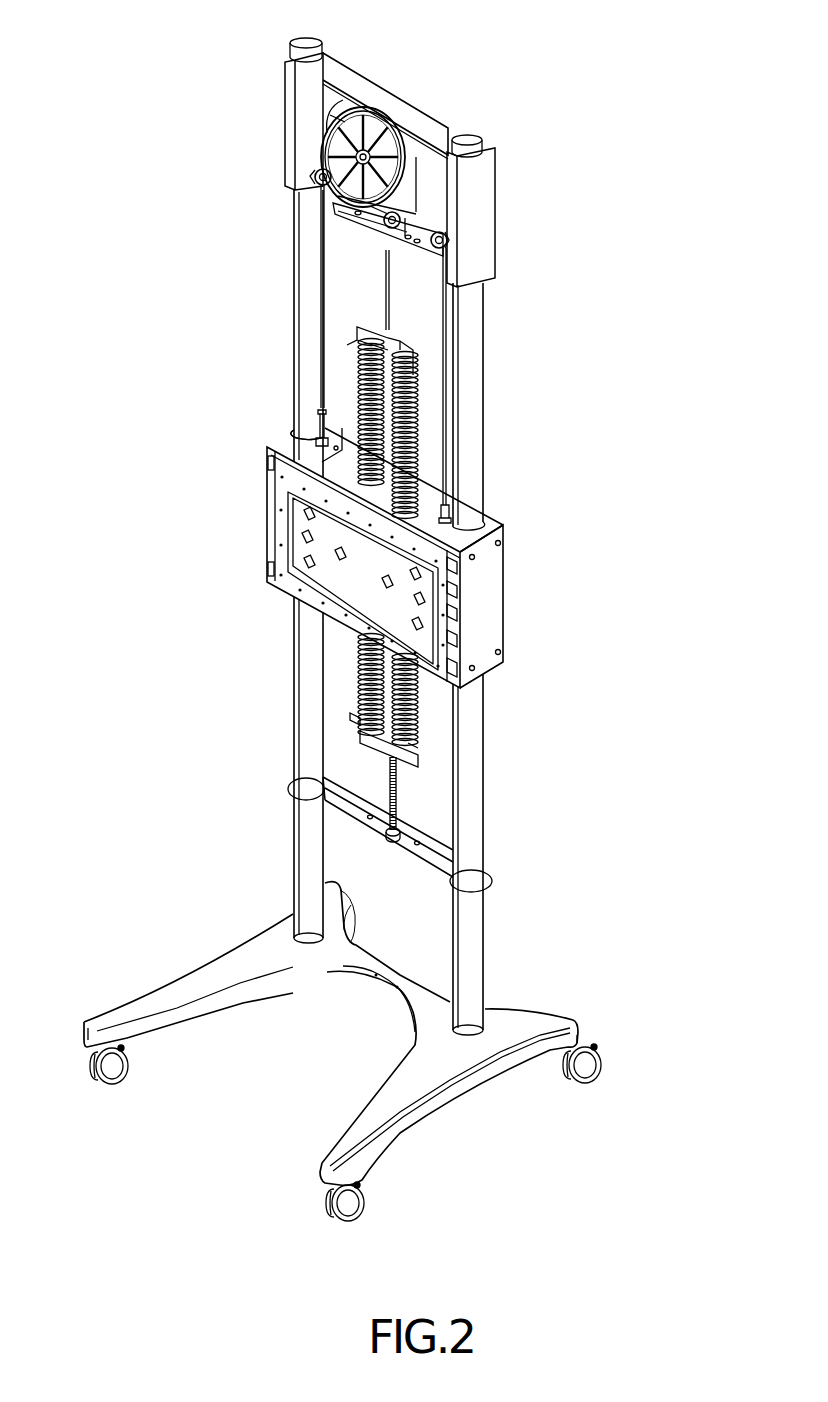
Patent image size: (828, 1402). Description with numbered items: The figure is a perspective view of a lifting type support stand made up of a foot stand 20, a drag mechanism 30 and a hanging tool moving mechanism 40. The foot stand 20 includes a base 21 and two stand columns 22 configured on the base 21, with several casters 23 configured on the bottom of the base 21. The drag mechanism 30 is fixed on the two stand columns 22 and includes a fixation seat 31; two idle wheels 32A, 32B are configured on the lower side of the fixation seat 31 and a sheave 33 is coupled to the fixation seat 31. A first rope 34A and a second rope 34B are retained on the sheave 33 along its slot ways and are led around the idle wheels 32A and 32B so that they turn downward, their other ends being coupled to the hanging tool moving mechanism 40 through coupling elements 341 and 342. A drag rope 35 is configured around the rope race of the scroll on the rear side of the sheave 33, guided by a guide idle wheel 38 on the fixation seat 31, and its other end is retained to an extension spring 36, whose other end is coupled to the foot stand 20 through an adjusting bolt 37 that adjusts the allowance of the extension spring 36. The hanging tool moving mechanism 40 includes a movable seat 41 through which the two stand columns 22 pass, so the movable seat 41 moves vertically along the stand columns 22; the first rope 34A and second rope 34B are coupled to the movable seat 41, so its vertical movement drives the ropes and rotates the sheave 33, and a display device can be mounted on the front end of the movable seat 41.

The foot stand 20 is at (226, 922).
The base 21 is at (453, 1078).
The stand columns 22 is at (295, 672).
The casters 23 is at (113, 1070).
The drag mechanism 30 is at (420, 99).
The fixation seat 31 is at (490, 205).
The idle wheel 32A is at (316, 181).
The idle wheel 32B is at (441, 250).
The sheave 33 is at (332, 122).
The first rope 34A is at (320, 257).
The second rope 34B is at (443, 378).
The drag rope 35 is at (385, 267).
The extension spring 36 is at (363, 380).
The adjusting bolt 37 is at (390, 767).
The guide idle wheel 38 is at (390, 222).
The hanging tool moving mechanism 40 is at (262, 510).
The movable seat 41 is at (493, 600).
The coupling element 341 is at (320, 437).
The coupling element 342 is at (457, 513).